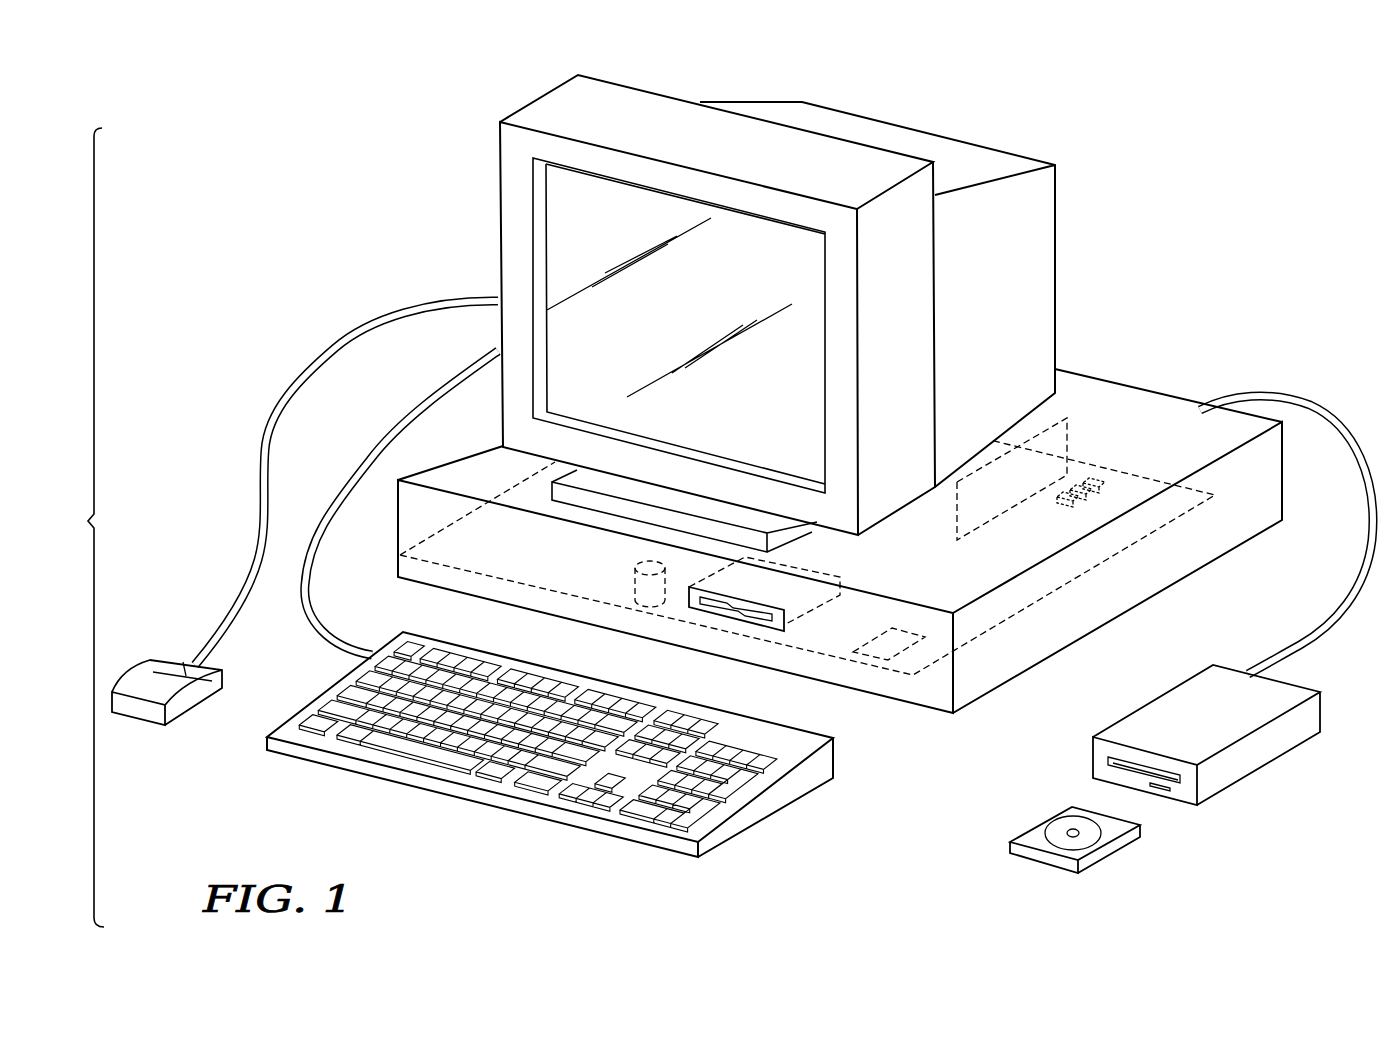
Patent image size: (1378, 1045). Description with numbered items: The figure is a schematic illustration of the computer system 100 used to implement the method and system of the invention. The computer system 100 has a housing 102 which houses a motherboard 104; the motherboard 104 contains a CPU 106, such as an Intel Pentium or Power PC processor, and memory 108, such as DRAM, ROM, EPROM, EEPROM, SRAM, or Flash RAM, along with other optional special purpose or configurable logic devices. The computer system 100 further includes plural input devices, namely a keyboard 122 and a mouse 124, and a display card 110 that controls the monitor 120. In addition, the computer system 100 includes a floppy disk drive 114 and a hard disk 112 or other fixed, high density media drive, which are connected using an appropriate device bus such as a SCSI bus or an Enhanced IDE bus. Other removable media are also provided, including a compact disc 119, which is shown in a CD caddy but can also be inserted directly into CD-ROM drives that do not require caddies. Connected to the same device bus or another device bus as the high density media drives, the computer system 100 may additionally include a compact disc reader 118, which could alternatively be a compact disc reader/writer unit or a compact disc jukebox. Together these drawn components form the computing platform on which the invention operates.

The computer system 100 is at (77, 527).
The housing 102 is at (1134, 392).
The motherboard 104 is at (1130, 482).
The CPU 106 is at (888, 652).
The memory 108 is at (1087, 477).
The display card 110 is at (1038, 432).
The hard disk 112 is at (635, 571).
The floppy disk drive 114 is at (788, 623).
The compact disc reader 118 is at (1258, 762).
The compact disc 119 is at (1095, 837).
The monitor 120 is at (917, 137).
The keyboard 122 is at (787, 797).
The mouse 124 is at (147, 670).